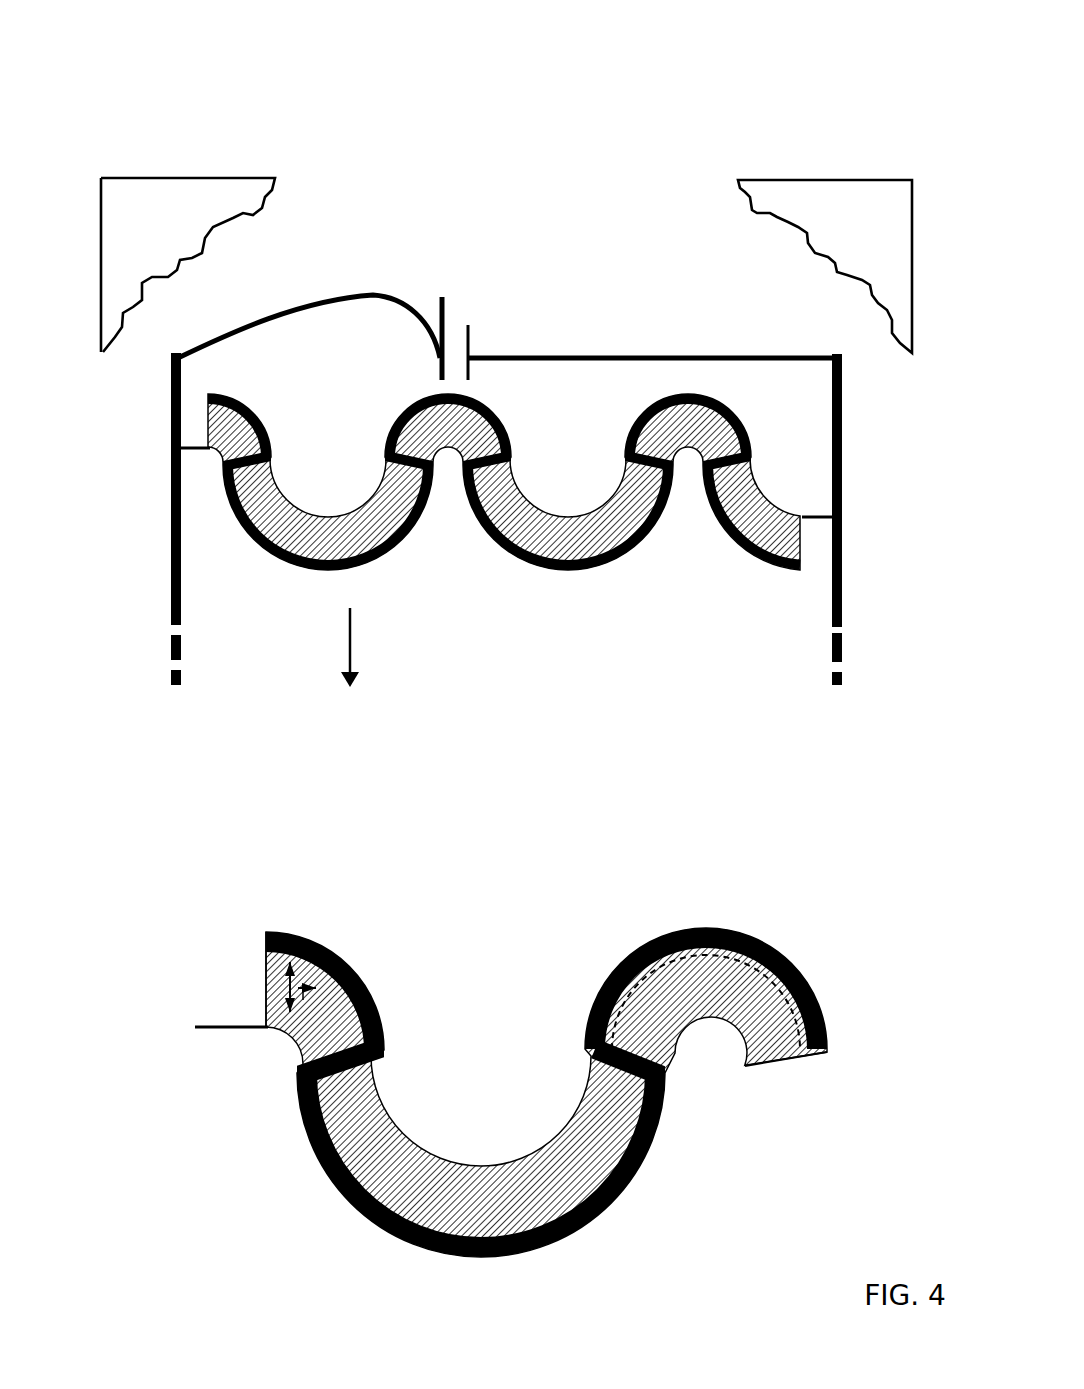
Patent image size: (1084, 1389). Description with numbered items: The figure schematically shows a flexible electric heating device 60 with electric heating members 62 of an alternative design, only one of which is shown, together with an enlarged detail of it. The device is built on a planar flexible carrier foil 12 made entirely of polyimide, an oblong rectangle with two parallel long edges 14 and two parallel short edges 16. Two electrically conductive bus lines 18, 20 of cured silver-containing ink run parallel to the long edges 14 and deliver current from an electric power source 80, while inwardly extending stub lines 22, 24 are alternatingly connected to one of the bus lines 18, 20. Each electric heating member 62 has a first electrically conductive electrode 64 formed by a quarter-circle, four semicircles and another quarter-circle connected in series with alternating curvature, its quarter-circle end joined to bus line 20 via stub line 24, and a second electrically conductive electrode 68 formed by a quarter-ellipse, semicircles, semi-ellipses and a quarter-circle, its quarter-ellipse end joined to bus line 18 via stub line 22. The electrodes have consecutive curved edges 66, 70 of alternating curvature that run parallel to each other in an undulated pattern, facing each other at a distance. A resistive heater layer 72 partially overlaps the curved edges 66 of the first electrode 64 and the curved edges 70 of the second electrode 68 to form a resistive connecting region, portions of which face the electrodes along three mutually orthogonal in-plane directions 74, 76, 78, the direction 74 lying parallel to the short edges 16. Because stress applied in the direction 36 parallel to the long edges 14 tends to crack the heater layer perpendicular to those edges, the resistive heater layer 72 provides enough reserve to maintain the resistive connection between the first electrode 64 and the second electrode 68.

The flexible electric heating device 60 is at (158, 70).
The planar flexible carrier foil 12 is at (807, 200).
The long edges 14 is at (103, 260).
The short edges 16 is at (237, 178).
The electrically conductive bus line 18 is at (171, 387).
The electrically conductive bus line 20 is at (840, 403).
The electrically conductive stub line 22 is at (190, 455).
The electrically conductive stub line 24 is at (818, 515).
The direction 36 is at (350, 645).
The electric heating member 62 is at (390, 405).
The first electrically conductive electrode 64 is at (607, 980).
The curved edge 66 is at (733, 955).
The second electrically conductive electrode 68 is at (345, 1202).
The curved edge 70 is at (753, 1052).
The resistive heater layer 72 is at (635, 1130).
The orthogonal direction 74 is at (305, 990).
The orthogonal direction 76 is at (290, 982).
The orthogonal direction 78 is at (287, 998).
The electric power source 80 is at (475, 287).